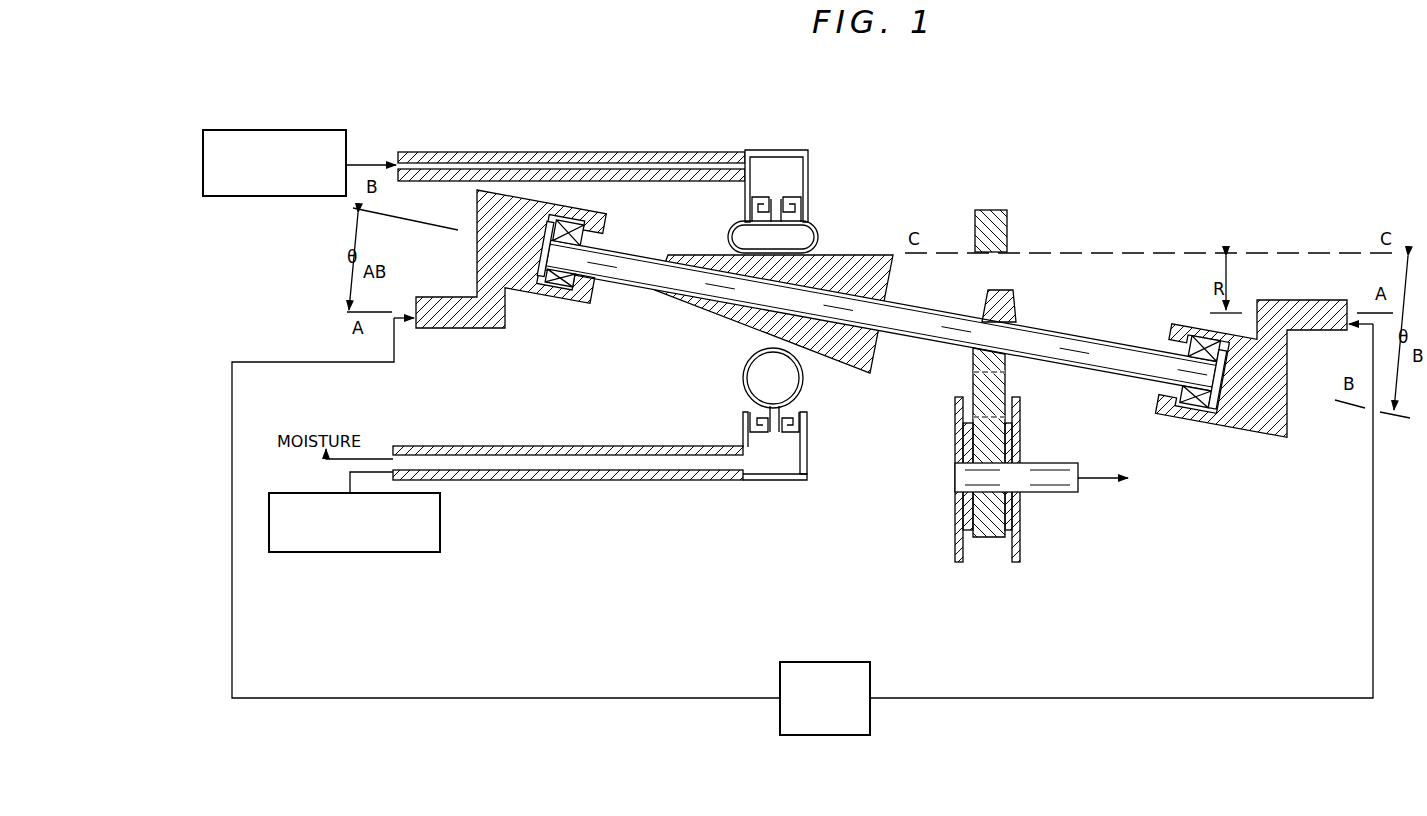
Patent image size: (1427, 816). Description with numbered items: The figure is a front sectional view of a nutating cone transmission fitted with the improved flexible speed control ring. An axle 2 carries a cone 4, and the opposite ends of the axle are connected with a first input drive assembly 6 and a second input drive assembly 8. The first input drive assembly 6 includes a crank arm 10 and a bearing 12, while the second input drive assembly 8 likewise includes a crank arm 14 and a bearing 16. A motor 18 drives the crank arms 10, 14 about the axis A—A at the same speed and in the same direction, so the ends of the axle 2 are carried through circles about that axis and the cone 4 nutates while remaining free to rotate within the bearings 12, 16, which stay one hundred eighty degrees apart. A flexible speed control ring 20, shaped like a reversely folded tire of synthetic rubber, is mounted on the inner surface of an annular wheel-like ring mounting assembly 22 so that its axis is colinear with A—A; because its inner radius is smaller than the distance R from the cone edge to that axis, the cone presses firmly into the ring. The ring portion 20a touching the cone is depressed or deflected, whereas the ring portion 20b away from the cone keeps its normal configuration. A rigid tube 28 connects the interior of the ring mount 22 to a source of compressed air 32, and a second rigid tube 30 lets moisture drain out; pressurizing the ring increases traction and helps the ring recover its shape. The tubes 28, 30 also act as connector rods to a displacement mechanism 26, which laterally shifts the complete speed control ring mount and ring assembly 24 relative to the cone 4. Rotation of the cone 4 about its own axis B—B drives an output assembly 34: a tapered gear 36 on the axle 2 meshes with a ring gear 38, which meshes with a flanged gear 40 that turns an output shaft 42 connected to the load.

The axle 2 is at (927, 303).
The cone 4 is at (857, 258).
The first input drive assembly 6 is at (520, 267).
The second input drive assembly 8 is at (1252, 372).
The crank arm 10 is at (512, 286).
The bearing 12 is at (562, 303).
The crank arm 14 is at (1267, 430).
The bearing 16 is at (1186, 402).
The motor 18 is at (822, 662).
The flexible speed control ring 20 is at (769, 299).
The ring portion in contact with the cone 20a is at (728, 240).
The ring portion not in contact with the cone 20b is at (803, 372).
The ring mounting assembly 22 is at (812, 176).
The speed control ring mount and ring assembly 24 is at (644, 163).
The displacement mechanism 26 is at (323, 552).
The rigid tube 28 is at (612, 152).
The rigid tube 30 is at (648, 480).
The source of compressed air 32 is at (270, 196).
The output assembly 34 is at (1082, 386).
The tapered gear 36 is at (1015, 301).
The ring gear 38 is at (1008, 230).
The flanged gear 40 is at (1025, 442).
The output shaft 42 is at (1060, 470).